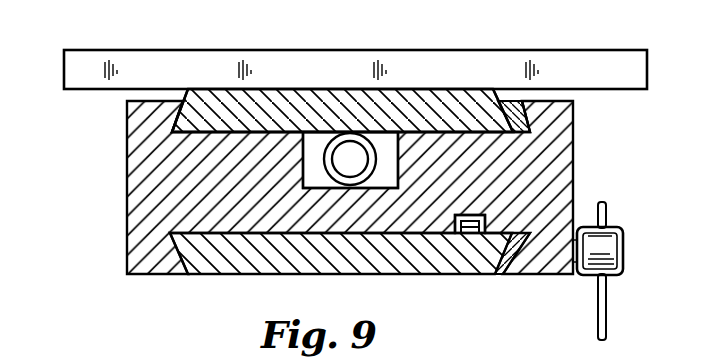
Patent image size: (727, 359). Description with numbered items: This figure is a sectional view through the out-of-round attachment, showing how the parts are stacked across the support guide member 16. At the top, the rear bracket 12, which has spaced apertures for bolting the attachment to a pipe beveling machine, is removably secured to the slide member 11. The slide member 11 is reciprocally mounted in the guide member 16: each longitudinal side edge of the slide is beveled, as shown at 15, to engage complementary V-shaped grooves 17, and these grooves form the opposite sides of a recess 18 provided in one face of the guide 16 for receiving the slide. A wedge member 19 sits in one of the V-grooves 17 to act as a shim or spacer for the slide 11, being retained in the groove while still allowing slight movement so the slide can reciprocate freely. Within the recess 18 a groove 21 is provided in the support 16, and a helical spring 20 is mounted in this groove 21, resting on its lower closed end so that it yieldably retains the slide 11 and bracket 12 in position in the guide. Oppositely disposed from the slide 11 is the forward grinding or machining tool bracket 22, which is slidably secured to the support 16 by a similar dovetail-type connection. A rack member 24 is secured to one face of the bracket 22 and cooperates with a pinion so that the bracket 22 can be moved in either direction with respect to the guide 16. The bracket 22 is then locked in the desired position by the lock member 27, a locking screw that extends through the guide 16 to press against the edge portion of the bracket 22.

The slide member 11 is at (377, 165).
The rear bracket 12 is at (530, 55).
The beveled side edge 15 is at (496, 93).
The support guide member 16 is at (131, 188).
The V-shaped groove 17 is at (177, 118).
The recess 18 is at (272, 120).
The wedge member 19 is at (530, 121).
The helical spring 20 is at (348, 132).
The groove 21 is at (400, 130).
The tool bracket 22 is at (247, 264).
The rack member 24 is at (470, 227).
The lock member 27 is at (612, 244).